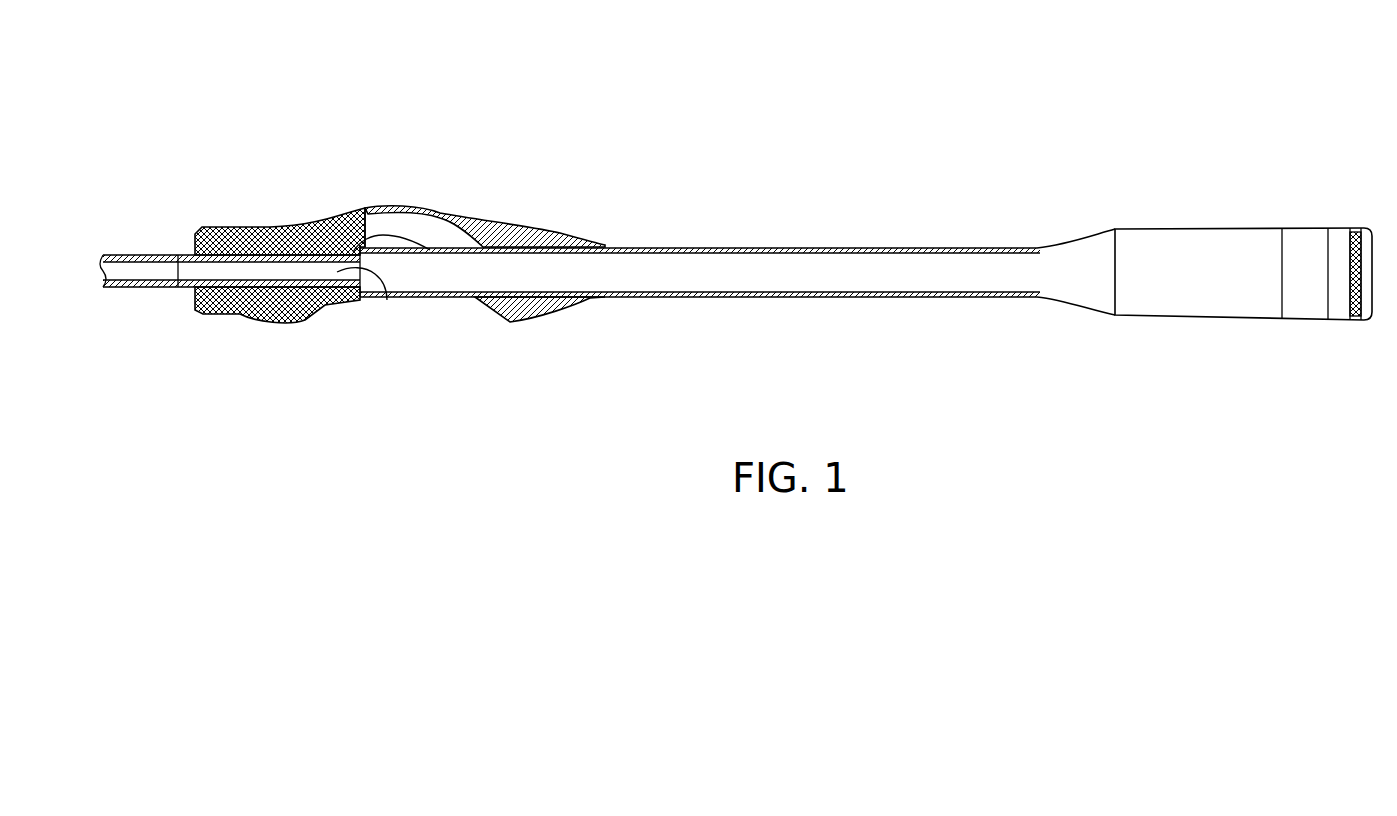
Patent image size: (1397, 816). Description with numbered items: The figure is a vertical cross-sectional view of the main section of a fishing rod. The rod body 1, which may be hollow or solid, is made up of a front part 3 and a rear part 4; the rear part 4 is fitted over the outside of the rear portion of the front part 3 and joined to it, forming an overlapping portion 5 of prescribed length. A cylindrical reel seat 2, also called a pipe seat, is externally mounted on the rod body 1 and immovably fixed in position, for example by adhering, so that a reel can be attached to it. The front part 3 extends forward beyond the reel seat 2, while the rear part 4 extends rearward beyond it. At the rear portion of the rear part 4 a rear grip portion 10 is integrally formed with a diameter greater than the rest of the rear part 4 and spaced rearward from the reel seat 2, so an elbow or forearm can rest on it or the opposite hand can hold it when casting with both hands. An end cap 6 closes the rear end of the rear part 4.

The rod body 1 is at (950, 178).
The reel seat 2 is at (410, 205).
The front part 3 is at (135, 252).
The rear part 4 is at (732, 248).
The overlapping portion 5 is at (387, 300).
The end cap 6 is at (1372, 230).
The rear grip portion 10 is at (1208, 228).